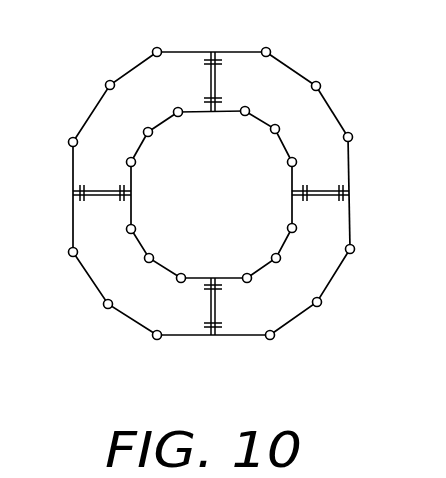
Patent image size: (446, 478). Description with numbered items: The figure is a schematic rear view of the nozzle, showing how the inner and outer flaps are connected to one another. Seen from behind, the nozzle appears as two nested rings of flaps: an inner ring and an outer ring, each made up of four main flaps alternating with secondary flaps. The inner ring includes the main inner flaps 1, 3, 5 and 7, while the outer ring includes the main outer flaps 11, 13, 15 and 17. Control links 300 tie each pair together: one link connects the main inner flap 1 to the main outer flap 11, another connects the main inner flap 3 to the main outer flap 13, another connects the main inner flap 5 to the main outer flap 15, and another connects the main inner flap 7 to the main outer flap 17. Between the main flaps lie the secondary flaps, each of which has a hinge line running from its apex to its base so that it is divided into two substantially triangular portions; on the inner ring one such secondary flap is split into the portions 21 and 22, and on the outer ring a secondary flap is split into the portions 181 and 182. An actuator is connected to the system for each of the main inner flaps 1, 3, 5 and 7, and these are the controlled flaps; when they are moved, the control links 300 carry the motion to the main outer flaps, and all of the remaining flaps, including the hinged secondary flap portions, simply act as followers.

The main inner flap 1 is at (231, 108).
The main inner flap 3 is at (130, 213).
The main inner flap 5 is at (195, 279).
The main inner flap 7 is at (294, 212).
The main outer flap 11 is at (240, 52).
The main outer flap 13 is at (72, 218).
The main outer flap 15 is at (237, 335).
The main outer flap 17 is at (352, 167).
The secondary flap portion 21 is at (140, 147).
The secondary flap portion 22 is at (165, 118).
The secondary flap portion 181 is at (293, 70).
The secondary flap portion 182 is at (335, 114).
The control links 300 is at (215, 307).